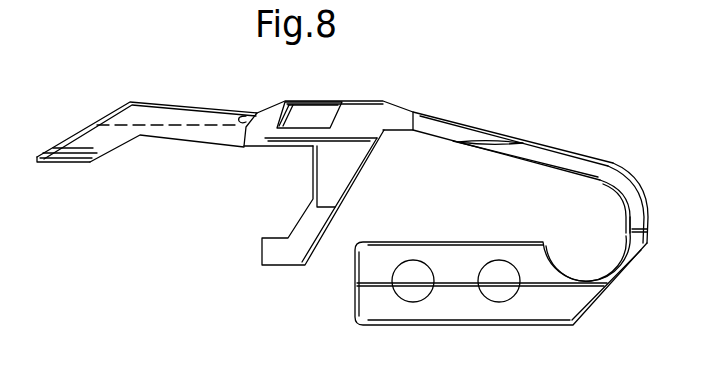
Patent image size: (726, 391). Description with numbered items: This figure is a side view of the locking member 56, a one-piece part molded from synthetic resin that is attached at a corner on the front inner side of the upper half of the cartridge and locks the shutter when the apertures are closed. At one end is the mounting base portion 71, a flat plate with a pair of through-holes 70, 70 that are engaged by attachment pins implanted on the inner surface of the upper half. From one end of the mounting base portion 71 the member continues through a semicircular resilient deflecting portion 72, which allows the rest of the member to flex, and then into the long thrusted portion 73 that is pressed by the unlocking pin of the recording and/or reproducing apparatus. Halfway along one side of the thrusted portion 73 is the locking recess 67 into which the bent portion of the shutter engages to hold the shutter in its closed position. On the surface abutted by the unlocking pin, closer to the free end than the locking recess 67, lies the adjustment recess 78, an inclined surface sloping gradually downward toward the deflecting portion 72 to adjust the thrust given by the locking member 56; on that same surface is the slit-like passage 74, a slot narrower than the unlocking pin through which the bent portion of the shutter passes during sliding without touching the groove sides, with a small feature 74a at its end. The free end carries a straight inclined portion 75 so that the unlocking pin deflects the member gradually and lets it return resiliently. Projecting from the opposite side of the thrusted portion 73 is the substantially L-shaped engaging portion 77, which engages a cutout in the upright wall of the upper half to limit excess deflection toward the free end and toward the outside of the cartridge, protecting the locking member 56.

The locking member 56 is at (472, 135).
The locking recess 67 is at (341, 106).
The through-holes 70 is at (413, 299).
The mounting base portion 71 is at (557, 318).
The semicircular resilient deflecting portion 72 is at (650, 218).
The thrusted portion 73 is at (194, 101).
The slit-like passage 74 is at (186, 127).
The notch 74a is at (244, 148).
The inclined portion 75 is at (74, 134).
The L-shaped engaging portion 77 is at (291, 266).
The adjustment recess 78 is at (258, 113).